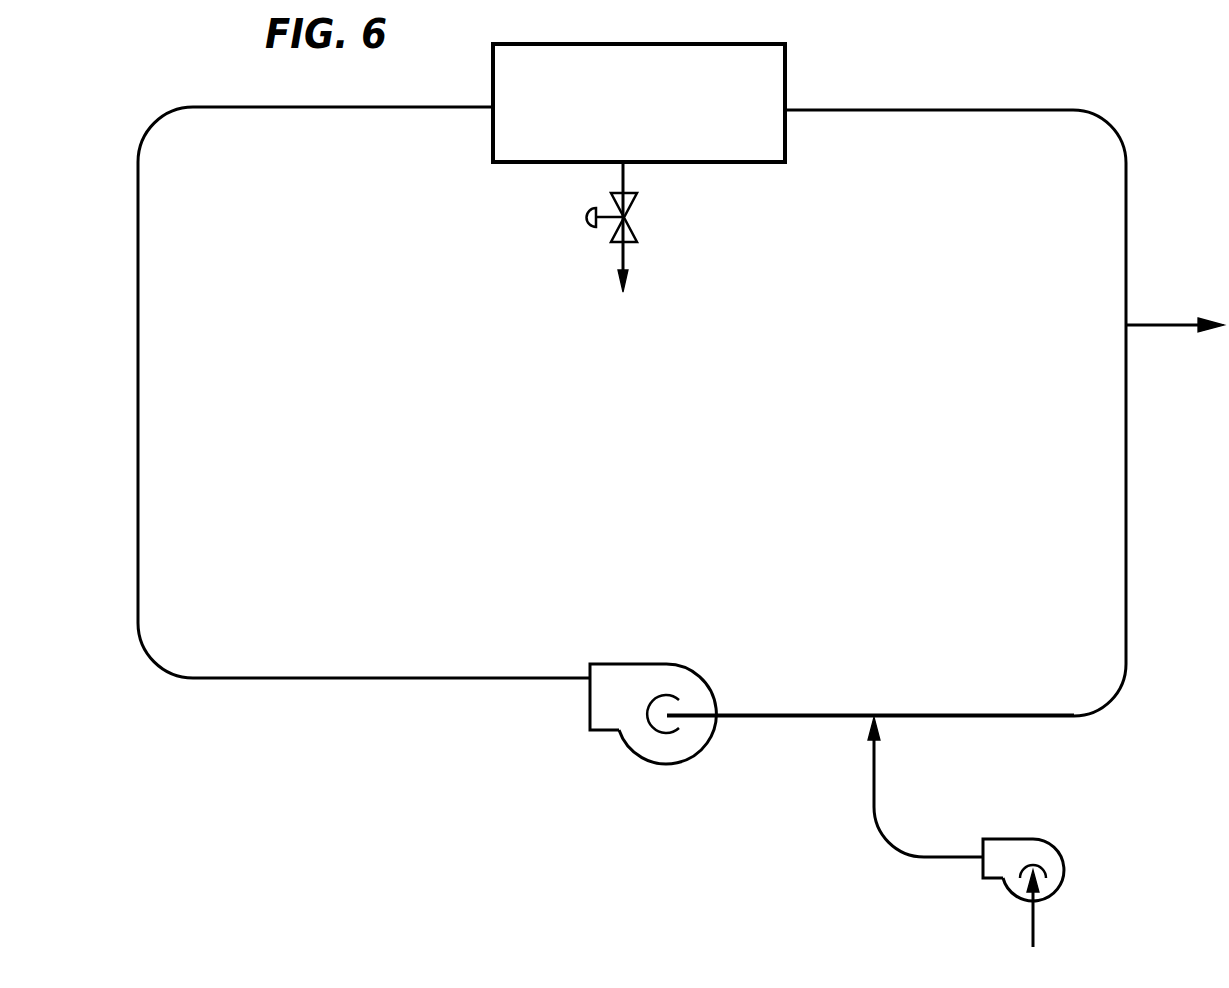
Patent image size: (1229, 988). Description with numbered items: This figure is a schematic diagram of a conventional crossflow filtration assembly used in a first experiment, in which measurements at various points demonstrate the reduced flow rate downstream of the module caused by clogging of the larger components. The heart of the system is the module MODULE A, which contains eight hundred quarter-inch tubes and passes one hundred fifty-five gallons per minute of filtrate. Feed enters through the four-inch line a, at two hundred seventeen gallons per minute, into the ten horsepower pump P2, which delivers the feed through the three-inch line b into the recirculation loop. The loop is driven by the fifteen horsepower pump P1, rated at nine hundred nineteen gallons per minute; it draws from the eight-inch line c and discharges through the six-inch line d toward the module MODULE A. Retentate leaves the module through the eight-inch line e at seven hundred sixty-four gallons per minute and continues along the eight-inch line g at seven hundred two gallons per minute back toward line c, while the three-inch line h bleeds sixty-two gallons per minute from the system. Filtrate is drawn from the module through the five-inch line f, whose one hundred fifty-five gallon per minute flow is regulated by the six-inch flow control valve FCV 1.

The module MODULE A is at (639, 103).
The flow control valve FCV 1 is at (650, 232).
The pump P1 is at (653, 714).
The pump P2 is at (1023, 870).
The line a is at (1035, 917).
The line b is at (877, 809).
The line c is at (762, 714).
The line d is at (432, 678).
The line e is at (922, 110).
The line f is at (624, 184).
The line g is at (1125, 418).
The line h is at (1186, 322).